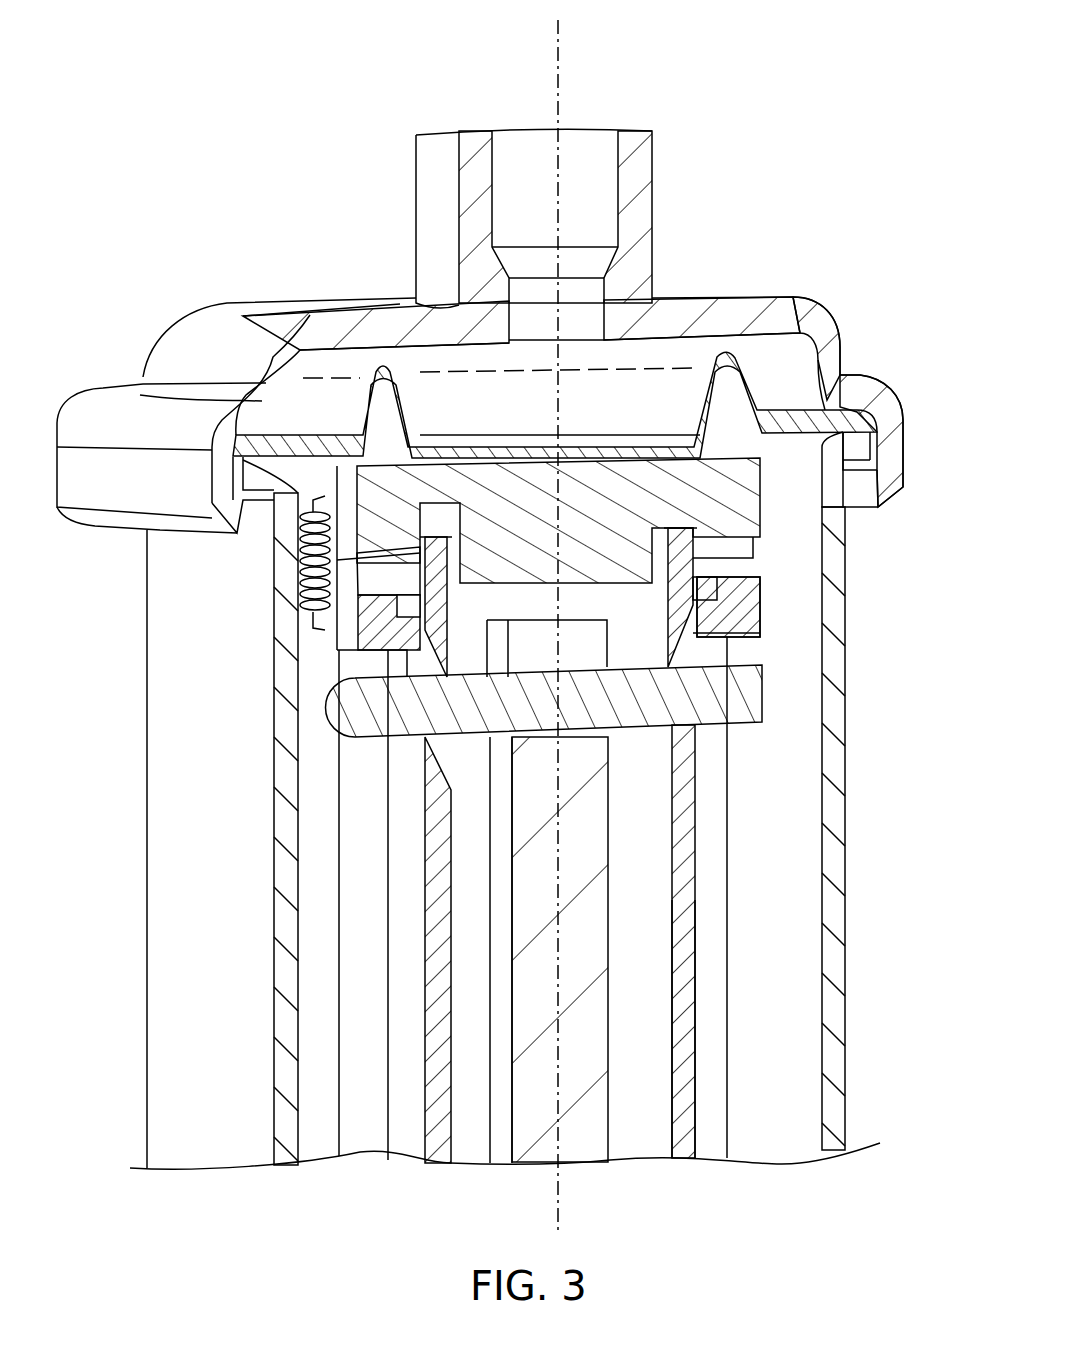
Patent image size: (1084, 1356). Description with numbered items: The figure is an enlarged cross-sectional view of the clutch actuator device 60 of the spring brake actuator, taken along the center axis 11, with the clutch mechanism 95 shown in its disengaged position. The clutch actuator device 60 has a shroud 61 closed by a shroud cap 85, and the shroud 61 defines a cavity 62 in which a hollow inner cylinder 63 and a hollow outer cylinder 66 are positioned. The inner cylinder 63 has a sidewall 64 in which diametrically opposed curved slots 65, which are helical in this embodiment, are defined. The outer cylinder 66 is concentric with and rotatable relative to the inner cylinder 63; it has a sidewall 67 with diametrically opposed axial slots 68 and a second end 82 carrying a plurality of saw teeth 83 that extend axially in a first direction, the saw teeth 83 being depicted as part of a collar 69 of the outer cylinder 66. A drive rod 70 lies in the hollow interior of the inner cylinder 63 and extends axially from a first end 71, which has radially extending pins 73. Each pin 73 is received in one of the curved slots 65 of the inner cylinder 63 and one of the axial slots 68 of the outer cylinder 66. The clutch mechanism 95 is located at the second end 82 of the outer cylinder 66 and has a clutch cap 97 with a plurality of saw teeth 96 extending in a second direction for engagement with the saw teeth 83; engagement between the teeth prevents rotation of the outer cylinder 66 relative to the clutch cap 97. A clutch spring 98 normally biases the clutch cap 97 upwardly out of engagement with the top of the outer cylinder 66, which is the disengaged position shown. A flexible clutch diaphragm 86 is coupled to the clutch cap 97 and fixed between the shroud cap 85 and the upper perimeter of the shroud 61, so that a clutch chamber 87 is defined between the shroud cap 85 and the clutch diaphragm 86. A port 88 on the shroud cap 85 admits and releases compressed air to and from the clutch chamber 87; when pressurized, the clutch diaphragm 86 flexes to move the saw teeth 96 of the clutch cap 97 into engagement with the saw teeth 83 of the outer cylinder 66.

The center axis 11 is at (566, 74).
The clutch actuator device 60 is at (118, 953).
The shroud 61 is at (836, 795).
The cavity 62 is at (789, 756).
The inner cylinder 63 is at (683, 1125).
The sidewall 64 is at (690, 1035).
The curved slots 65 is at (636, 790).
The outer cylinder 66 is at (367, 1150).
The sidewall 67 is at (355, 1100).
The axial slots 68 is at (366, 792).
The collar 69 is at (757, 615).
The drive rod 70 is at (590, 1145).
The first end 71 is at (642, 650).
The pins 73 is at (742, 702).
The second end 82 is at (773, 607).
The saw teeth 83 is at (755, 580).
The shroud cap 85 is at (712, 318).
The clutch diaphragm 86 is at (318, 373).
The clutch chamber 87 is at (634, 380).
The port 88 is at (634, 138).
The clutch mechanism 95 is at (724, 410).
The saw teeth 96 is at (740, 550).
The clutch cap 97 is at (745, 497).
The clutch spring 98 is at (345, 600).